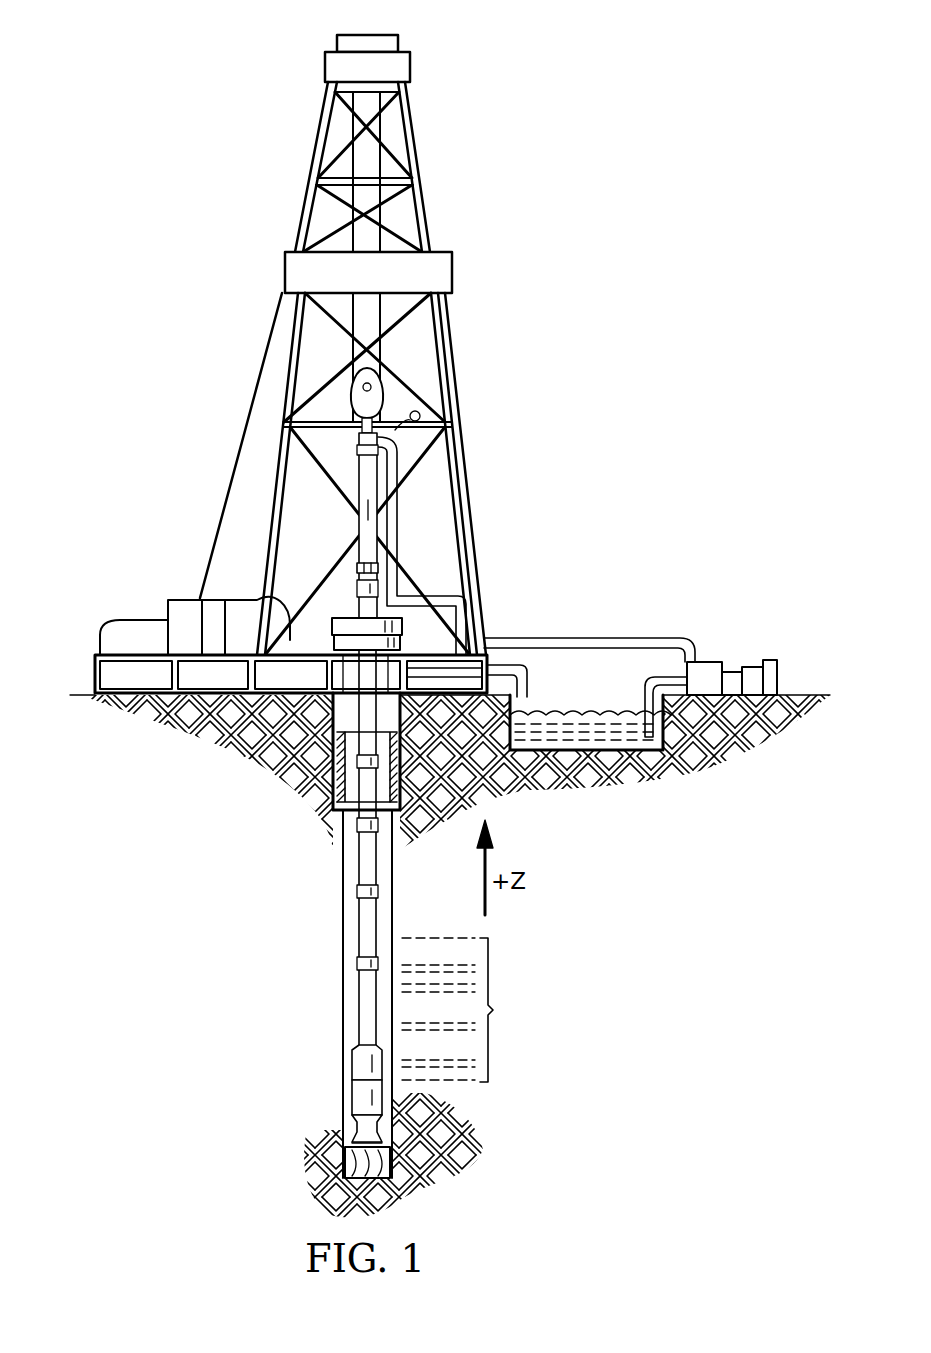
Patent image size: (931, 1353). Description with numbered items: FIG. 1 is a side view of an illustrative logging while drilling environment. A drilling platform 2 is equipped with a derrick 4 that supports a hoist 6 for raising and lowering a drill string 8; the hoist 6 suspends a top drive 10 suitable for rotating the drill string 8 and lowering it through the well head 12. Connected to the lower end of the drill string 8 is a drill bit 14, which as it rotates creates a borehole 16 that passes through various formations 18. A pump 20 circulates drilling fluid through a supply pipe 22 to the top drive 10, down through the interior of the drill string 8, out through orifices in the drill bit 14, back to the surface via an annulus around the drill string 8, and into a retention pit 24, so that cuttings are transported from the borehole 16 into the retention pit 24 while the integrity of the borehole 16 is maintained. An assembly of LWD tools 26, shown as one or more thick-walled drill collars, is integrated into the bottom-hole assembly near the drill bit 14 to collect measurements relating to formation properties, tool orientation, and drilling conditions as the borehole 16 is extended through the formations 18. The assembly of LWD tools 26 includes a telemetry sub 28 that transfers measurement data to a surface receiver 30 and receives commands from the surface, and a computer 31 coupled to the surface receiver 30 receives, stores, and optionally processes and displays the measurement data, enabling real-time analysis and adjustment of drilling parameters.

The drilling platform 2 is at (95, 675).
The derrick 4 is at (420, 166).
The hoist 6 is at (347, 403).
The drill string 8 is at (376, 858).
The top drive 10 is at (367, 490).
The well head 12 is at (341, 616).
The drill bit 14 is at (395, 1150).
The borehole 16 is at (393, 880).
The formations 18 is at (468, 1010).
The pump 20 is at (710, 660).
The supply pipe 22 is at (595, 638).
The retention pit 24 is at (585, 720).
The LWD tools 26 is at (362, 1098).
The telemetry sub 28 is at (362, 1066).
The surface receiver 30 is at (380, 567).
The computer 31 is at (200, 628).